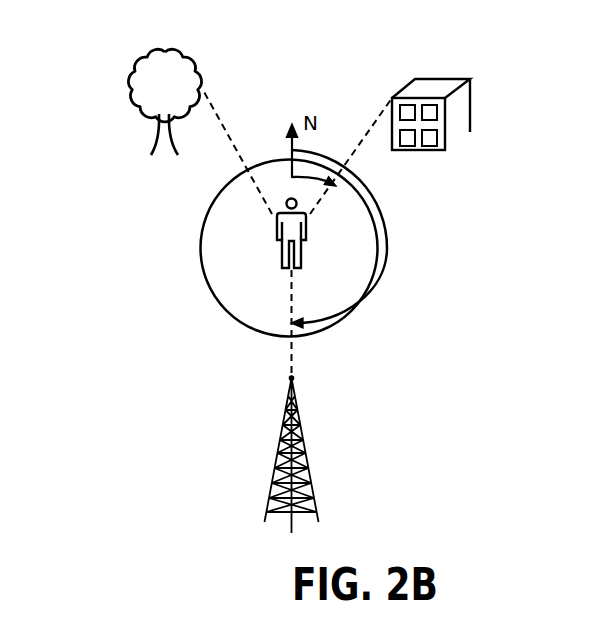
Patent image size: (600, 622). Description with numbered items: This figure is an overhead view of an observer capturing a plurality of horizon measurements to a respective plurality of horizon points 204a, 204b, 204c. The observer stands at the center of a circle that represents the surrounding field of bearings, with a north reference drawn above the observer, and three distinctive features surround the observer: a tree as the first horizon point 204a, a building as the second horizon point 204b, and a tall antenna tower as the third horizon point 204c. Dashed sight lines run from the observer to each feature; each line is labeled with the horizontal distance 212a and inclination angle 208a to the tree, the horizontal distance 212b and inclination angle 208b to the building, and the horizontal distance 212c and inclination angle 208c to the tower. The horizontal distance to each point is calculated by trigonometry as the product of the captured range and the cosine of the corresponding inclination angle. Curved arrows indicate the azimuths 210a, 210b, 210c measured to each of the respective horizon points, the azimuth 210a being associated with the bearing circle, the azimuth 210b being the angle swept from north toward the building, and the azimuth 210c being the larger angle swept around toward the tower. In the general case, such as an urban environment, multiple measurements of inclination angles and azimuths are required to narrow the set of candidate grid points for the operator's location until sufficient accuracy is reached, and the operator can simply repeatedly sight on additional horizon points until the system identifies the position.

The horizon point 204a is at (130, 70).
The horizon point 204b is at (470, 110).
The horizon point 204c is at (312, 472).
The azimuth 210a is at (200, 265).
The azimuth 210b is at (305, 175).
The azimuth 210c is at (382, 258).
The horizontal distance 212a is at (160, 152).
The inclination angle 208a is at (227, 133).
The horizontal distance 212b is at (381, 118).
The inclination angle 208b is at (378, 117).
The horizontal distance 212c is at (376, 323).
The inclination angle 208c is at (293, 355).